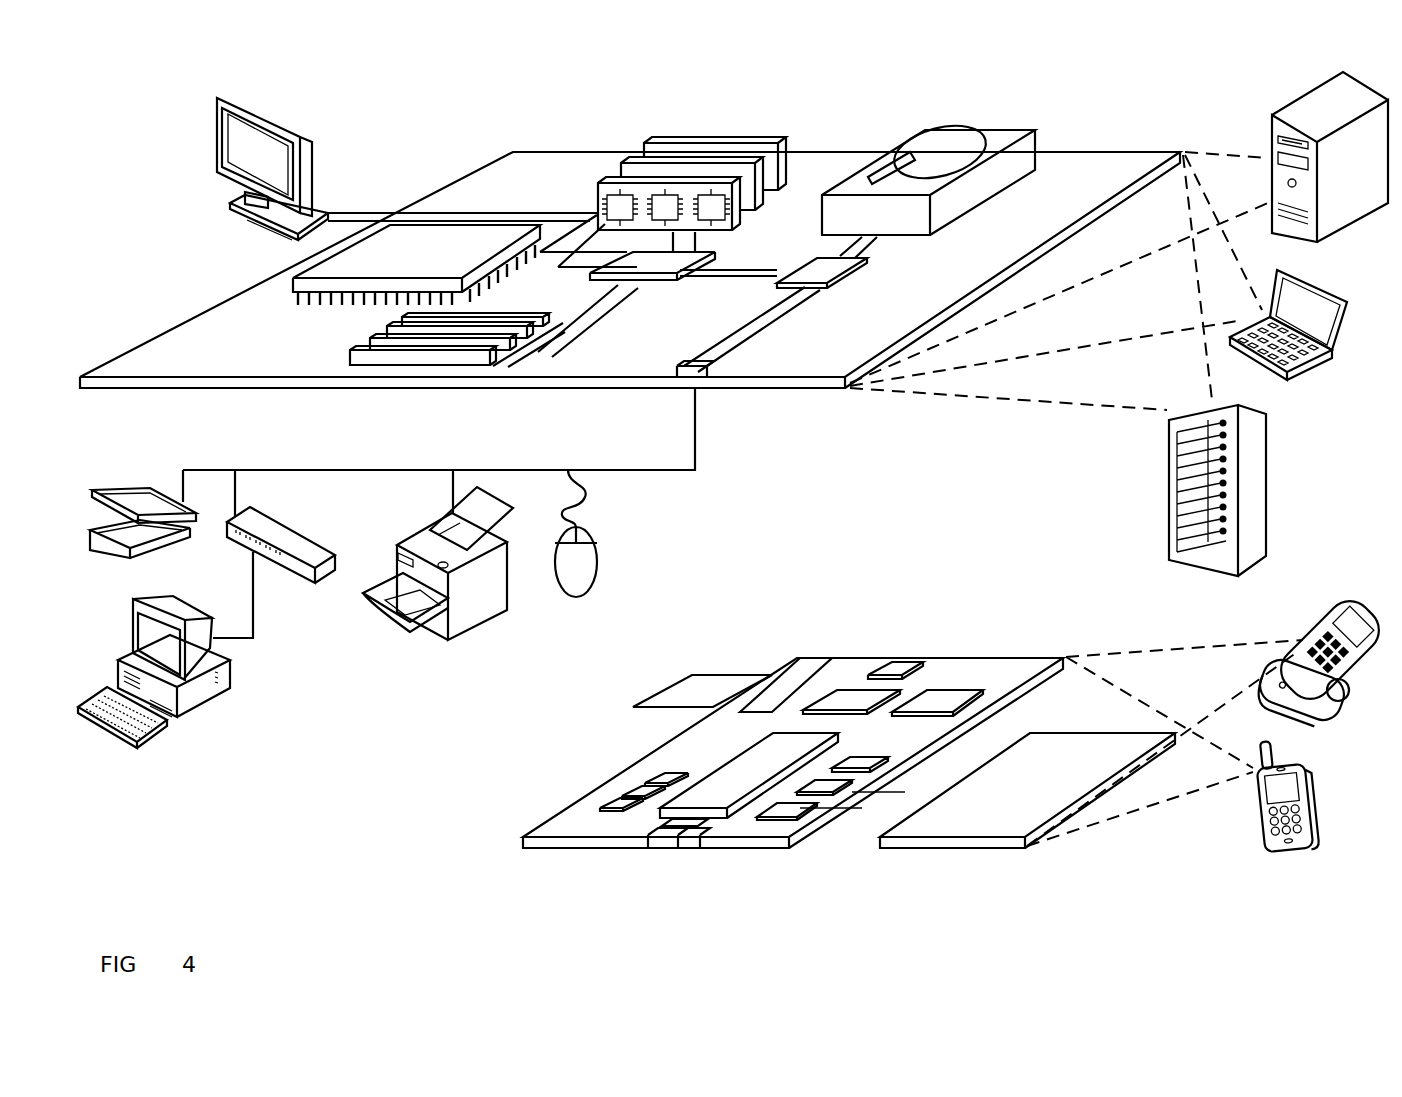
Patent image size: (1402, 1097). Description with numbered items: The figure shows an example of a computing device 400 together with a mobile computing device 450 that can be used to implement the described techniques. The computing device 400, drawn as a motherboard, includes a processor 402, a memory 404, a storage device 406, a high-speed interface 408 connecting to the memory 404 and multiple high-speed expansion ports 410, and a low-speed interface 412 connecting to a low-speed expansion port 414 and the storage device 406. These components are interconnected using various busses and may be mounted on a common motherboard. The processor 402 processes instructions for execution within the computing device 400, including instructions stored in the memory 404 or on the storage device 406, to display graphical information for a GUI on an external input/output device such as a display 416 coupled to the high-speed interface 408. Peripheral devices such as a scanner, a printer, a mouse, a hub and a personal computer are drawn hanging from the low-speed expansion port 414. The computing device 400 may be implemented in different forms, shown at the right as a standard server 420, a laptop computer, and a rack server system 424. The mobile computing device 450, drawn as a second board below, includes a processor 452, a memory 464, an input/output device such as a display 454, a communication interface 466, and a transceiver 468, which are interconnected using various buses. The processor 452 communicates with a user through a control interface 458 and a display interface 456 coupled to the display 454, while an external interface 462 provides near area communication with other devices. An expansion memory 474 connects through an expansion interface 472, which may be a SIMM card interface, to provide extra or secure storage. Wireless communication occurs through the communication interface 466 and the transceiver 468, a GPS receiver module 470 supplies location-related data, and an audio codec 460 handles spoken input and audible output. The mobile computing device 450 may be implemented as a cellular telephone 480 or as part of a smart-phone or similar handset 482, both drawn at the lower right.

The computing device 400 is at (433, 122).
The processor 402 is at (300, 283).
The memory 404 is at (657, 143).
The storage device 406 is at (912, 128).
The high-speed interface 408 is at (627, 262).
The high-speed expansion ports 410 is at (355, 352).
The low-speed interface 412 is at (820, 268).
The low-speed expansion port 414 is at (707, 376).
The display 416 is at (224, 92).
The standard server 420 is at (1270, 133).
The rack server system 424 is at (1169, 518).
The mobile computing device 450 is at (498, 846).
The processor 452 is at (717, 805).
The display 454 is at (980, 820).
The display interface 456 is at (793, 807).
The control interface 458 is at (830, 780).
The audio codec 460 is at (860, 760).
The external interface 462 is at (680, 838).
The memory 464 is at (628, 796).
The communication interface 466 is at (852, 698).
The transceiver 468 is at (935, 700).
The GPS receiver module 470 is at (912, 660).
The expansion interface 472 is at (773, 672).
The expansion memory 474 is at (690, 672).
The cellular telephone 480 is at (1305, 613).
The mobile handset 482 is at (1262, 802).